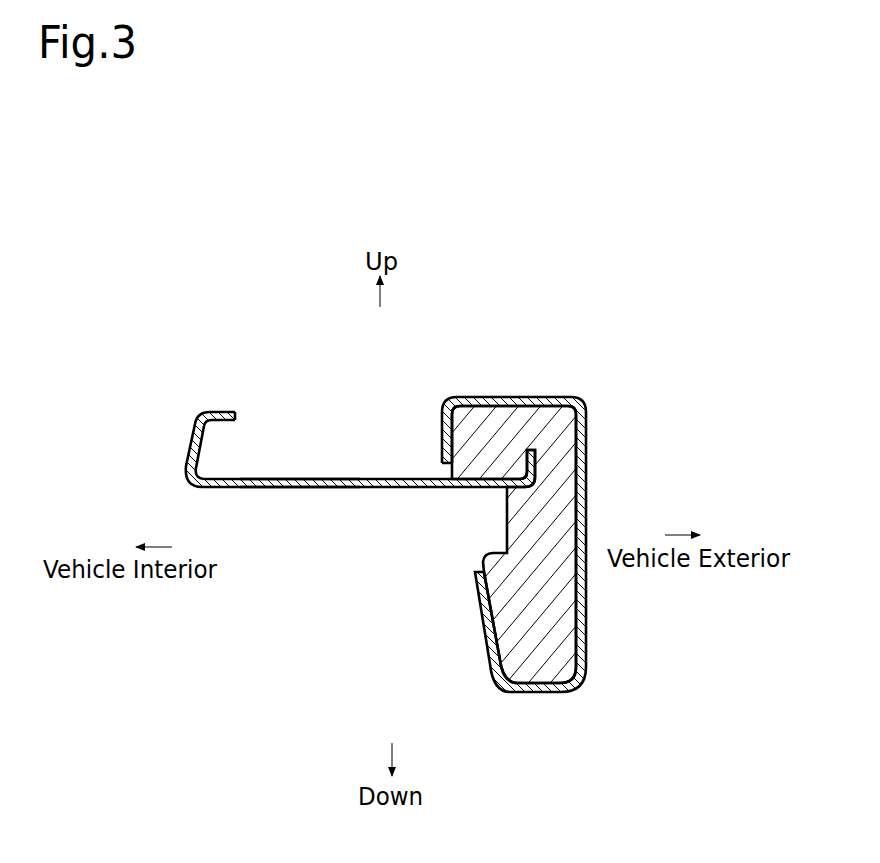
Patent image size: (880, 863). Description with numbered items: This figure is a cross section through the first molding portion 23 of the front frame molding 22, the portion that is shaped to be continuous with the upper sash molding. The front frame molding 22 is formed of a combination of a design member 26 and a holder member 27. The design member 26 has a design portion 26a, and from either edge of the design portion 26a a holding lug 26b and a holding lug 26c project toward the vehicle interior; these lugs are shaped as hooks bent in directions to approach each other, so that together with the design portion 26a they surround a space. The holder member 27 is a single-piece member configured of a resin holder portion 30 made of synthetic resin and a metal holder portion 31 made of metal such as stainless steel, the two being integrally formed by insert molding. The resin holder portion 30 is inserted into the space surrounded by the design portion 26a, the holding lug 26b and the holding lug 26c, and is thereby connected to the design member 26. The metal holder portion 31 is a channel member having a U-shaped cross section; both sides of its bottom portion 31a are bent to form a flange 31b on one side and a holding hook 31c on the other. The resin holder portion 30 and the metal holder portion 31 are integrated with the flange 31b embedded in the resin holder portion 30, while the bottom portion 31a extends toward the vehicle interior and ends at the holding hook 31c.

The front frame molding 22 is at (470, 516).
The first molding portion 23 is at (194, 355).
The design member 26 is at (588, 405).
The design portion 26a is at (582, 605).
The holding lug 26b is at (442, 430).
The holding lug 26c is at (482, 640).
The holder member 27 is at (397, 598).
The resin holder portion 30 is at (515, 531).
The metal holder portion 31 is at (338, 488).
The bottom portion 31a is at (288, 480).
The flange 31b is at (537, 457).
The holding hook 31c is at (193, 425).